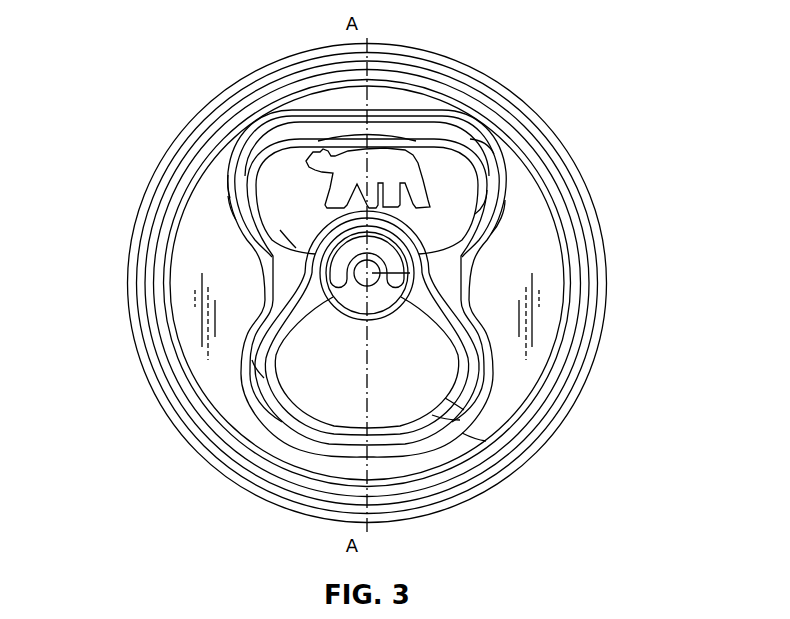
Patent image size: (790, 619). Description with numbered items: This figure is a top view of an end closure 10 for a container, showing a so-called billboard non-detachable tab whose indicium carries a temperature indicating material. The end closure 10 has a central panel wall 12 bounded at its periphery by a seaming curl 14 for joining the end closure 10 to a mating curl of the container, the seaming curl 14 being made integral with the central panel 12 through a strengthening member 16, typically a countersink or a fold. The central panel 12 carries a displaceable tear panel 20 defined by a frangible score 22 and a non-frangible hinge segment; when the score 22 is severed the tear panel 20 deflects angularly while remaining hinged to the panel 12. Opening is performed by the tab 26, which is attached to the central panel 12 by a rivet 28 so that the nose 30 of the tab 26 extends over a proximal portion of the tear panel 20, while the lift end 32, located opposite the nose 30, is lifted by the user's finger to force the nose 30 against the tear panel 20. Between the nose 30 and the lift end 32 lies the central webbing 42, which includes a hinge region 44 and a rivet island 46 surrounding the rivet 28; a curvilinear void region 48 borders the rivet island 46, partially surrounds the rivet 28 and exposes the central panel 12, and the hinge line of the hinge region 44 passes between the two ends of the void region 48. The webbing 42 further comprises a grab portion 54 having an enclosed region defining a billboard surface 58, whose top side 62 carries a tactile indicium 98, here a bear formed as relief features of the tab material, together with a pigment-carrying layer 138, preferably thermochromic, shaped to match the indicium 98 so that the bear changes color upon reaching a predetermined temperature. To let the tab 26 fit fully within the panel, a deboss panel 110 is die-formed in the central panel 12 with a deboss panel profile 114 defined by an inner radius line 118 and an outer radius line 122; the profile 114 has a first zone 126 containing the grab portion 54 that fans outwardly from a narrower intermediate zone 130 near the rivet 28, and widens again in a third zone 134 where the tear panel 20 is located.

The end closure 10 is at (132, 85).
The central panel wall 12 is at (537, 252).
The seaming curl 14 is at (608, 297).
The strengthening member 16 is at (582, 288).
The intermediate zone 130 is at (600, 340).
The third zone 134 is at (575, 385).
The frangible score 22 is at (352, 312).
The first zone 126 is at (500, 168).
The lift end 32 is at (273, 150).
The top side 62 is at (281, 195).
The rivet 28 is at (437, 355).
The deboss panel 110 is at (292, 272).
The rivet island 46 is at (355, 335).
The nose 30 is at (368, 335).
The indicium 98 is at (393, 163).
The pigment-carrying layer 138 is at (320, 150).
The billboard surface 58 is at (497, 152).
The central webbing 42 is at (492, 205).
The void region 48 is at (495, 215).
The tear panel 20 is at (453, 403).
The outer radius line 122 is at (440, 418).
The inner radius line 118 is at (470, 437).
The hinge region 44 is at (265, 372).
The tab 26 is at (290, 238).
The deboss panel profile 114 is at (233, 203).
The grab portion 54 is at (228, 195).